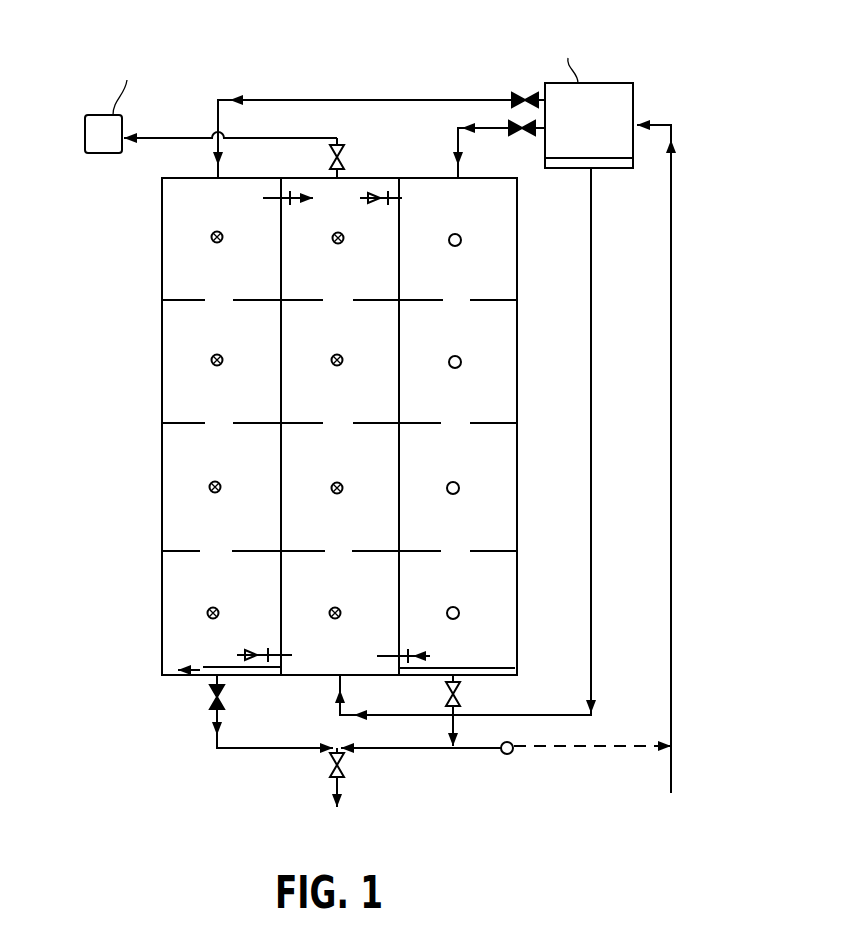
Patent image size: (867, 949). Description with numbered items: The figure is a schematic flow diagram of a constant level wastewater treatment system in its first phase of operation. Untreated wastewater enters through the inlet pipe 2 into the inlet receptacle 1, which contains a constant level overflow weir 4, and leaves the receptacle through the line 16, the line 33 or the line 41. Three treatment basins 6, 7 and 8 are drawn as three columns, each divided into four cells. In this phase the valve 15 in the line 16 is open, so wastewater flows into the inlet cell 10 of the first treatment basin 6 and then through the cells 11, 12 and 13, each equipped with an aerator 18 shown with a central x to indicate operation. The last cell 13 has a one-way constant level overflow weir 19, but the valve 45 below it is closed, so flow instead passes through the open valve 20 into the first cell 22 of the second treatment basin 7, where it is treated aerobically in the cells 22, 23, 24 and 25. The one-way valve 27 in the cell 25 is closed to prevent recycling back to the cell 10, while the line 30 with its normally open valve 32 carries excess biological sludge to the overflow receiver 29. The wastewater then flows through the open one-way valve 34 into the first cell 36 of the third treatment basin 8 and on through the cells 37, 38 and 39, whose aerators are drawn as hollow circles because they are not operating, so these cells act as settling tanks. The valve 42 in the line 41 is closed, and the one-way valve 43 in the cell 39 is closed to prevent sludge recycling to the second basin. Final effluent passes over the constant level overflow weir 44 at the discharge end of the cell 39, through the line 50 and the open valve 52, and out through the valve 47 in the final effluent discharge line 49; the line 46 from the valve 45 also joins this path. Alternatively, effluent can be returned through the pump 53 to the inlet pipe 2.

The inlet receptacle 1 is at (633, 96).
The inlet pipe 2 is at (672, 507).
The constant level overflow weir 4 is at (614, 168).
The first treatment basin 6 is at (196, 703).
The second treatment basin 7 is at (382, 161).
The third treatment basin 8 is at (532, 664).
The inlet cell 10 is at (193, 284).
The cell 11 is at (188, 409).
The cell 12 is at (193, 542).
The last cell 13 is at (190, 657).
The valve 15 is at (520, 96).
The line 16 is at (338, 98).
The aerator 18 is at (215, 231).
The one-way constant level overflow weir 19 is at (202, 676).
The valve 20 is at (265, 652).
The cell 22 is at (332, 587).
The cell 23 is at (332, 459).
The cell 24 is at (322, 339).
The last cell 25 is at (322, 284).
The one-way valve 27 is at (306, 201).
The overflow receiver 29 is at (113, 155).
The line 30 is at (260, 137).
The normally open valve 32 is at (343, 148).
The line 33 is at (591, 401).
The one-way valve 34 is at (382, 201).
The cell 36 is at (508, 219).
The cell 37 is at (510, 340).
The cell 38 is at (512, 460).
The cell 39 is at (510, 587).
The line 41 is at (493, 130).
The valve 42 is at (527, 134).
The one-way valve 43 is at (418, 654).
The constant level overflow weir 44 is at (490, 668).
The valve 45 is at (221, 697).
The line 46 is at (237, 749).
The valve 47 is at (340, 764).
The final effluent discharge line 49 is at (334, 783).
The line 50 is at (451, 725).
The valve 52 is at (462, 694).
The pump 53 is at (510, 752).